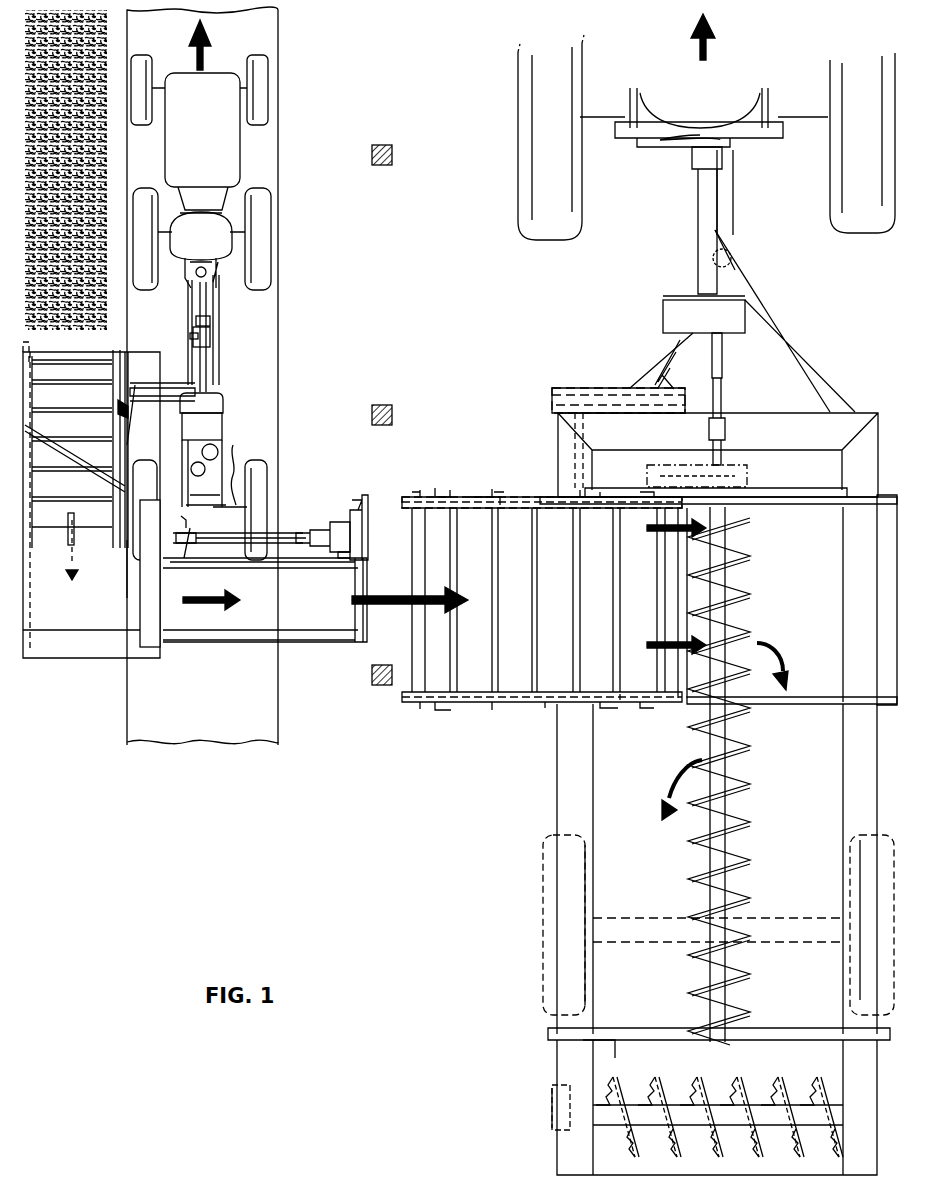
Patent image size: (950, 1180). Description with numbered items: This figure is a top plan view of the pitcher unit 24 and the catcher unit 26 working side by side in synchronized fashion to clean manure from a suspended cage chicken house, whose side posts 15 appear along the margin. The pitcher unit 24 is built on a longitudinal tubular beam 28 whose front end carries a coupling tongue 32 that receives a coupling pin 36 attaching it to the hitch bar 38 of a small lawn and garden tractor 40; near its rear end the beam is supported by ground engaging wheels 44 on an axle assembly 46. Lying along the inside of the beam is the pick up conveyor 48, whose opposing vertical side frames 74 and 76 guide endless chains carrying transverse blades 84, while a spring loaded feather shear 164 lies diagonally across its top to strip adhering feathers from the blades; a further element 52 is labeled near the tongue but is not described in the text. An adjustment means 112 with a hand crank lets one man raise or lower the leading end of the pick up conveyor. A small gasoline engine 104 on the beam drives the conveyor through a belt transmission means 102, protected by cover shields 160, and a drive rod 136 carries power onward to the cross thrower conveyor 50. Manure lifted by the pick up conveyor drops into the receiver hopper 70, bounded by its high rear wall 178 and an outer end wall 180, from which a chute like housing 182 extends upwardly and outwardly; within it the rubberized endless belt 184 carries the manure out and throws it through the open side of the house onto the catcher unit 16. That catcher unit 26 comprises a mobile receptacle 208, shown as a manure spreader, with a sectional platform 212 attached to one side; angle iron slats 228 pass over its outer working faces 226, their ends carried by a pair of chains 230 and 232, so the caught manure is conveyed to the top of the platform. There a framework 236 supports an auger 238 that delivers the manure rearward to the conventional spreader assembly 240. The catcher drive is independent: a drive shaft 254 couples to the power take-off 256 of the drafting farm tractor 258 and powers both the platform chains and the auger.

The posts 15 is at (372, 700).
The catcher unit 16 is at (483, 762).
The pitcher unit 24 is at (177, 61).
The catcher unit 26 is at (588, 380).
The tubular beam 28 is at (196, 352).
The coupling tongue 32 is at (188, 320).
The coupling pin 36 is at (232, 282).
The hitch bar 38 is at (184, 282).
The lawn and garden tractor 40 is at (205, 138).
The ground engaging wheels 44 is at (262, 469).
The axle assembly 46 is at (247, 463).
The pick up conveyor 48 is at (96, 546).
The cross thrower conveyor 50 is at (245, 640).
The link 52 is at (188, 335).
The receiver hopper 70 is at (63, 620).
The vertical side frame 74 is at (38, 393).
The vertical side frame 76 is at (122, 430).
The blades 84 is at (118, 372).
The belt transmission means 102 is at (200, 545).
The gasoline engine 104 is at (218, 410).
The adjustment means 112 is at (213, 322).
The drive rod 136 is at (302, 545).
The cover shields 160 is at (160, 572).
The feather shear 164 is at (75, 463).
The rear wall 178 is at (116, 648).
The end wall 180 is at (28, 600).
The chute like housing 182 is at (200, 640).
The endless belt 184 is at (314, 614).
The mobile receptacle 208 is at (561, 452).
The sectional platform 212 is at (481, 496).
The outer working faces 226 is at (468, 670).
The angle iron slats 228 is at (541, 670).
The chain 230 is at (587, 700).
The chain 232 is at (568, 500).
The framework 236 is at (780, 708).
The auger 238 is at (695, 737).
The spreader assembly 240 is at (608, 1080).
The drive shaft 254 is at (716, 386).
The power take-off 256 is at (690, 310).
The farm tractor 258 is at (655, 140).